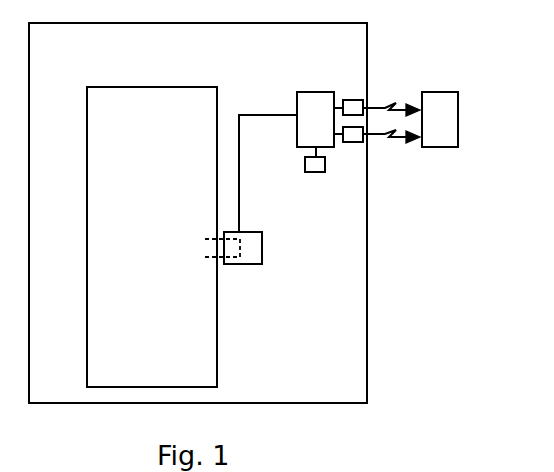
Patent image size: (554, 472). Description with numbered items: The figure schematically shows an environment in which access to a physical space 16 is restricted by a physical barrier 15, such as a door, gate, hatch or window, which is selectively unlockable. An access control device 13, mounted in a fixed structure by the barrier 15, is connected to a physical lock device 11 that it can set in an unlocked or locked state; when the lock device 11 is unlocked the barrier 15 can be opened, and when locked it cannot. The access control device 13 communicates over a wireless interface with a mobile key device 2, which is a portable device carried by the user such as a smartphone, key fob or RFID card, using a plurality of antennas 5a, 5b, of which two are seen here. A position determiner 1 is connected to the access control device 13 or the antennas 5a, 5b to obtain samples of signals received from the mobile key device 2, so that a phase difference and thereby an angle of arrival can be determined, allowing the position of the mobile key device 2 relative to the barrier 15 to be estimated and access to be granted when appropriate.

The physical space 16 is at (207, 60).
The physical barrier 15 is at (167, 126).
The access control device 13 is at (332, 126).
The antenna 5a is at (356, 100).
The antenna 5b is at (363, 135).
The mobile key device 2 is at (449, 113).
The position determiner 1 is at (325, 164).
The physical lock device 11 is at (248, 264).